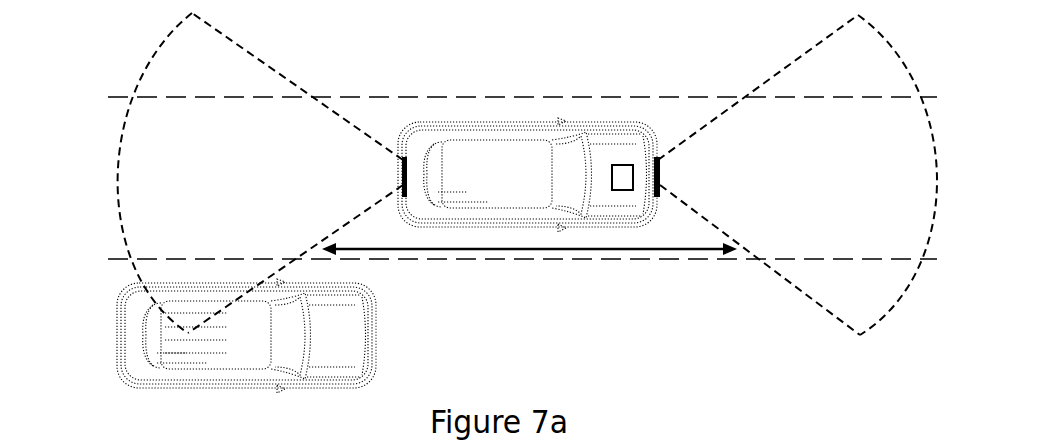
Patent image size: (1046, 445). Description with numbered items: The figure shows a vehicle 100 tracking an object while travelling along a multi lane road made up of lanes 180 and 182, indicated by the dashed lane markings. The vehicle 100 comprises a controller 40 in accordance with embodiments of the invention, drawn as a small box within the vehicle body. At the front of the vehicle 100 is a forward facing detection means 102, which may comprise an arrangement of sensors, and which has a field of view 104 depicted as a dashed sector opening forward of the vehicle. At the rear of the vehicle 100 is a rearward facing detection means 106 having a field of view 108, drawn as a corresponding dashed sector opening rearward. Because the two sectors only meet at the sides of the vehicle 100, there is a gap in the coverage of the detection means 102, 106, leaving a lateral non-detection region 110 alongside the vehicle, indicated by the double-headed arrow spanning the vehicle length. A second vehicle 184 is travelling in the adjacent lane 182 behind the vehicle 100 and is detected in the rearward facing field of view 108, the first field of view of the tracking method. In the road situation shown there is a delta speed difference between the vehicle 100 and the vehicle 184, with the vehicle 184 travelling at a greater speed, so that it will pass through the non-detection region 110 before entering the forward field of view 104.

The controller 40 is at (623, 164).
The vehicle 100 is at (527, 175).
The forward facing detection means 102 is at (661, 182).
The field of view 104 is at (788, 65).
The rearward facing detection means 106 is at (403, 173).
The field of view 108 is at (252, 55).
The lateral non-detection region 110 is at (518, 248).
The lane 180 is at (95, 192).
The lane 182 is at (95, 350).
The vehicle 184 is at (345, 332).